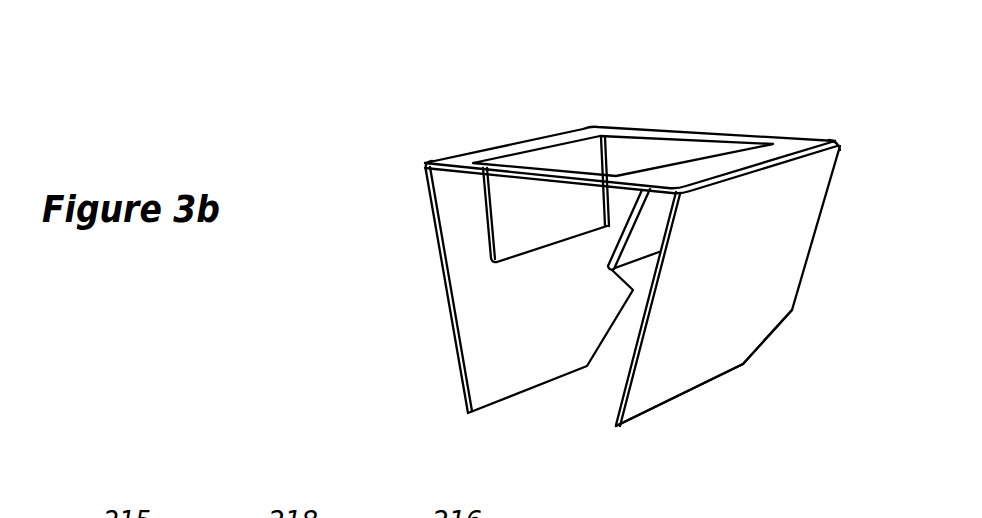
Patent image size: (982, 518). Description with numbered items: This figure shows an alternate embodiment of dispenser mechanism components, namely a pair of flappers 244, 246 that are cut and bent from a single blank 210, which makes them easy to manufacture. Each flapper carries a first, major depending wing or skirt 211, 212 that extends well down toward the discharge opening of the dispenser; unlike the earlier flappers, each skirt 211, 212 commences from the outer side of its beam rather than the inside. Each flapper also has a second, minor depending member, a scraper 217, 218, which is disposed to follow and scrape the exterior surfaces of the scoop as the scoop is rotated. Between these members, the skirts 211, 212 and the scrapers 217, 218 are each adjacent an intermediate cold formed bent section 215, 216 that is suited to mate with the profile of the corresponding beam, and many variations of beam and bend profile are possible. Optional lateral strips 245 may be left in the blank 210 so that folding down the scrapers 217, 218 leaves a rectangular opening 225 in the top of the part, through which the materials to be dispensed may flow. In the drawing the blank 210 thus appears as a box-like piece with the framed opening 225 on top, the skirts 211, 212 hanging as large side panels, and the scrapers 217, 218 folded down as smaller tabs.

The single blank 210 is at (661, 378).
The first depending wing or skirt 211 is at (497, 292).
The first depending wing or skirt 212 is at (713, 352).
The intermediate cold formed bent section 215 is at (421, 157).
The intermediate cold formed bent section 216 is at (754, 163).
The scraper 217 is at (513, 218).
The scraper 218 is at (608, 257).
The rectangular opening 225 is at (627, 160).
The flapper 244 is at (729, 279).
The lateral strips 245 is at (568, 172).
The flapper 246 is at (477, 157).